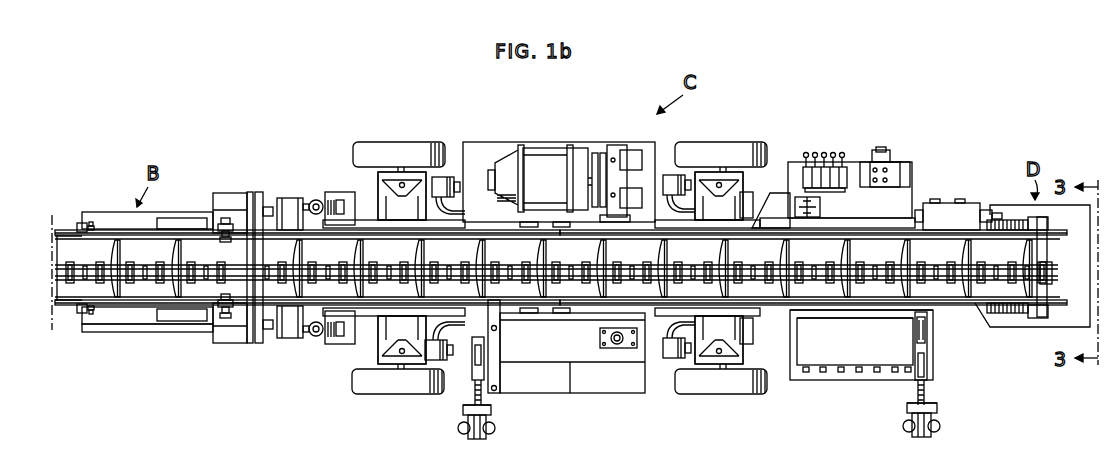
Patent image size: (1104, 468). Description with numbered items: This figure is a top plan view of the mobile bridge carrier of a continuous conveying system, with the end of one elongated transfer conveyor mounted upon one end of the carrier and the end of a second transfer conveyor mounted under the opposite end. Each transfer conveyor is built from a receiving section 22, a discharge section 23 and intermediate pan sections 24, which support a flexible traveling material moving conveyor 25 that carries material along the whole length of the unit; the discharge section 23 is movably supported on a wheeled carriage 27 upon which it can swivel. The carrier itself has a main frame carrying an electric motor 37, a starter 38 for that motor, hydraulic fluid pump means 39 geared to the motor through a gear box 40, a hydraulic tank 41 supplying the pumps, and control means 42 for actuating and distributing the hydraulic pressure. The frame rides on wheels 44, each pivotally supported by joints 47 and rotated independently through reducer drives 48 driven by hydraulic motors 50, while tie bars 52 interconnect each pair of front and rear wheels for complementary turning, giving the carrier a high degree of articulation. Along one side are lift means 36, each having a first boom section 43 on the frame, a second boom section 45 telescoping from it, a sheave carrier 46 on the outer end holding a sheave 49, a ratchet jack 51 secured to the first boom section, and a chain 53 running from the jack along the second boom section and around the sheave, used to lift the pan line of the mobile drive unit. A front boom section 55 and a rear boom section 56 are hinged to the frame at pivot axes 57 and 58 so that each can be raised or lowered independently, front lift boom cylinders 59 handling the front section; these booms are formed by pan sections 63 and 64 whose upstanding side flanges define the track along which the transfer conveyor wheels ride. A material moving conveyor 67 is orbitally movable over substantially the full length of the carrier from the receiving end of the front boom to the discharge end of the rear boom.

The receiving section 22 is at (1055, 318).
The discharge section 23 is at (192, 323).
The intermediate pan sections 24 is at (127, 308).
The flexible traveling material moving conveyor 25 is at (55, 243).
The carriage 27 is at (150, 333).
The lift means 36 is at (900, 430).
The electric motor 37 is at (560, 160).
The starter 38 is at (878, 355).
The hydraulic fluid pump means 39 is at (625, 160).
The gear box 40 is at (596, 160).
The hydraulic tank 41 is at (588, 387).
The control means 42 is at (843, 152).
The first boom section 43 is at (928, 365).
The wheels 44 is at (400, 150).
The second boom section 45 is at (926, 393).
The sheave carrier 46 is at (937, 412).
The joints 47 is at (400, 182).
The reducer drives 48 is at (378, 183).
The sheave 49 is at (934, 434).
The hydraulic motors 50 is at (442, 185).
The ratchet jack 51 is at (926, 343).
The tie bars 52 is at (462, 212).
The chain 53 is at (916, 438).
The front boom section 55 is at (311, 262).
The rear boom section 56 is at (884, 262).
The pivot axis 57 is at (528, 222).
The pivot axis 58 is at (567, 222).
The front lift boom cylinders 59 is at (312, 203).
The pan section 63 is at (397, 237).
The pan section 64 is at (825, 312).
The material moving conveyor 67 is at (962, 232).